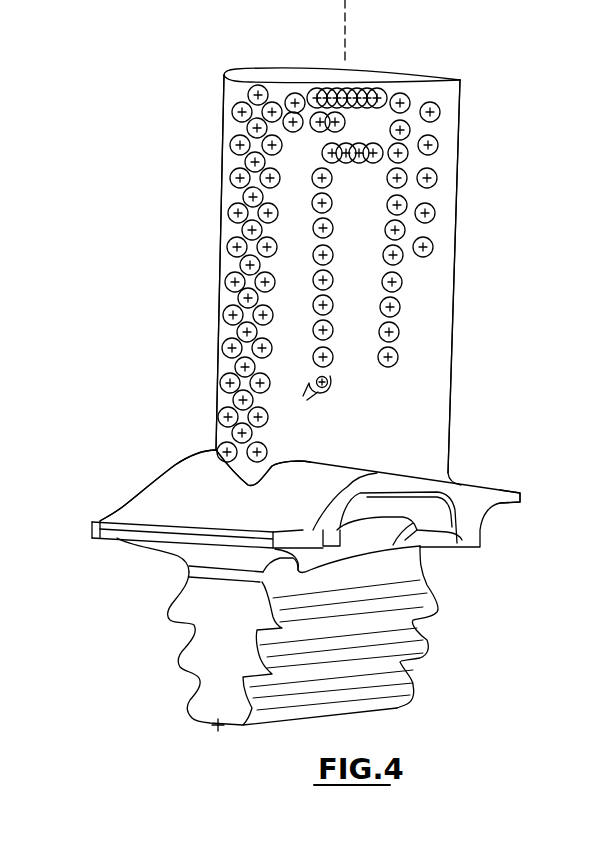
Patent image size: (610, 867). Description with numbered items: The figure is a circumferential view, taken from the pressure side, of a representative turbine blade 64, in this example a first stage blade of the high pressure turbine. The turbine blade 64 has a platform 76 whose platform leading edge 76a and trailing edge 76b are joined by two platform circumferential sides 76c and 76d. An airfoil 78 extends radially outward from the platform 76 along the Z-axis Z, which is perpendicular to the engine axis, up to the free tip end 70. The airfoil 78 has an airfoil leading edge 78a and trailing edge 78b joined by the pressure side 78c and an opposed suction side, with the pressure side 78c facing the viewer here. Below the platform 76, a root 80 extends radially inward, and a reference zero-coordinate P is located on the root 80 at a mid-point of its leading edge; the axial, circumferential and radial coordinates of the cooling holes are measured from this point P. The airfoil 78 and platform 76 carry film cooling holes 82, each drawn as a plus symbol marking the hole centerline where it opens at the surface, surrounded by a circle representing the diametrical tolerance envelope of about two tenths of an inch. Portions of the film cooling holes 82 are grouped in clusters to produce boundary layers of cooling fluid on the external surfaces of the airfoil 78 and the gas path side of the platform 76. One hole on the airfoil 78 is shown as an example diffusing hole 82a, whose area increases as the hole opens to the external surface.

The free tip end 70 is at (250, 79).
The Z-axis Z is at (345, 43).
The airfoil 78 is at (452, 317).
The airfoil leading edge 78a is at (220, 237).
The airfoil trailing edge 78b is at (457, 212).
The pressure side 78c is at (417, 393).
The film cooling holes 82 is at (214, 285).
The diffusing hole 82a is at (334, 396).
The platform 76 is at (507, 514).
The platform leading edge 76a is at (92, 527).
The platform trailing edge 76b is at (522, 497).
The platform circumferential side 76c is at (163, 463).
The platform circumferential side 76d is at (450, 490).
The turbine blade 64 is at (106, 573).
The root 80 is at (177, 678).
The reference zero-coordinate P is at (218, 727).